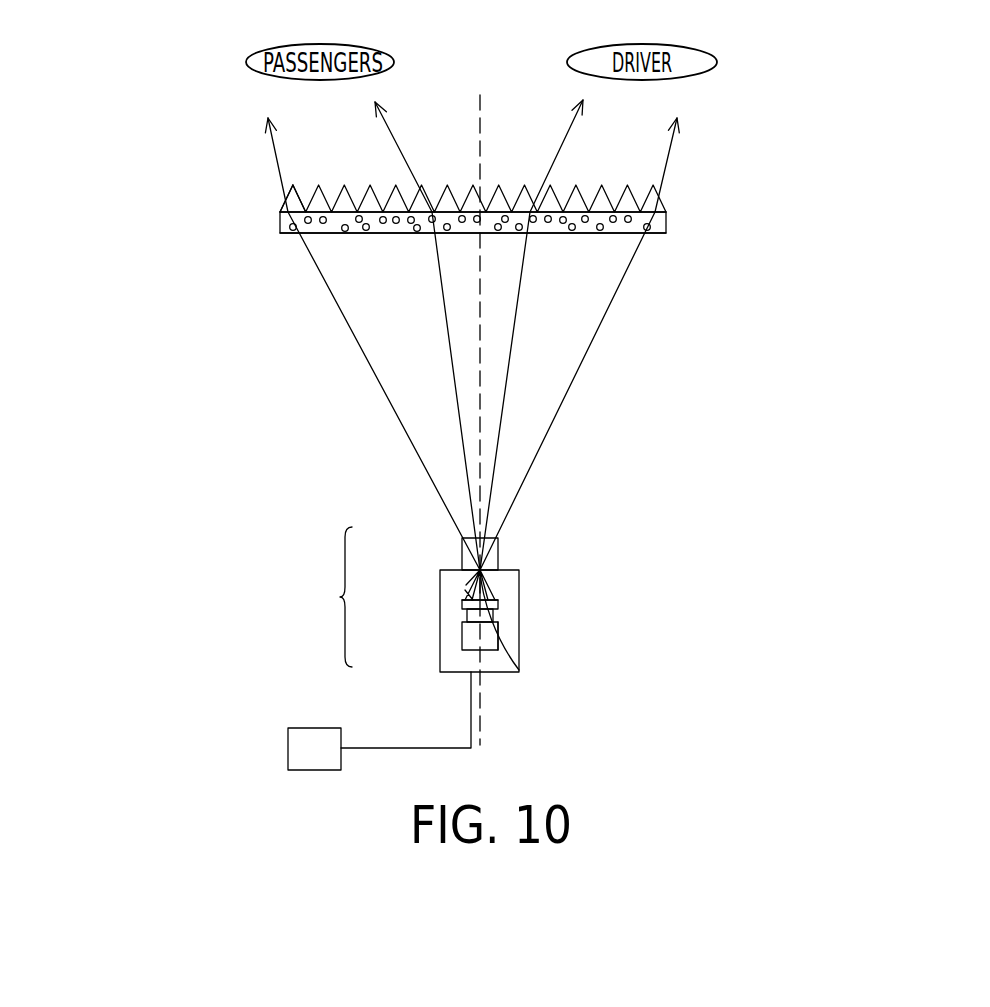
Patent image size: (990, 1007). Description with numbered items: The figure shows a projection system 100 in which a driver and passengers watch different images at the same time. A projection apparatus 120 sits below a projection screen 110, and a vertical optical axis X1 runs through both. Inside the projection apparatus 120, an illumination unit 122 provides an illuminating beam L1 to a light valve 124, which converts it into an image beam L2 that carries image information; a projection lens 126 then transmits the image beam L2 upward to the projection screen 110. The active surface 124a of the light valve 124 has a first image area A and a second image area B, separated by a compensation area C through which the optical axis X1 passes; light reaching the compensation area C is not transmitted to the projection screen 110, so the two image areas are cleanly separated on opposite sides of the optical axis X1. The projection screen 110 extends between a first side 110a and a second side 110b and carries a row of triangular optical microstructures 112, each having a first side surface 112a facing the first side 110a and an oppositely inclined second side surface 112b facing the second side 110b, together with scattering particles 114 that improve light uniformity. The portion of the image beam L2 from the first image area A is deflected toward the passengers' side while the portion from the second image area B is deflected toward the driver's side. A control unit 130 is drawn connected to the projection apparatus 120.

The projection system 100 is at (973, 660).
The projection screen 110 is at (833, 212).
The first side 110a is at (669, 221).
The second side 110b is at (278, 224).
The optical microstructures 112 is at (658, 210).
The first side surface 112a is at (303, 195).
The second side surface 112b is at (286, 202).
The scattering particles 114 is at (648, 231).
The projection apparatus 120 is at (406, 599).
The illumination unit 122 is at (468, 637).
The light valve 124 is at (462, 605).
The active surface 124a is at (472, 600).
The projection lens 126 is at (462, 562).
The controller 130 is at (296, 750).
The illuminating beam L1 is at (495, 617).
The image beam L2 is at (453, 390).
The first image area A is at (493, 613).
The second image area B is at (519, 670).
The compensation area C is at (498, 638).
The optical axis X1 is at (480, 703).